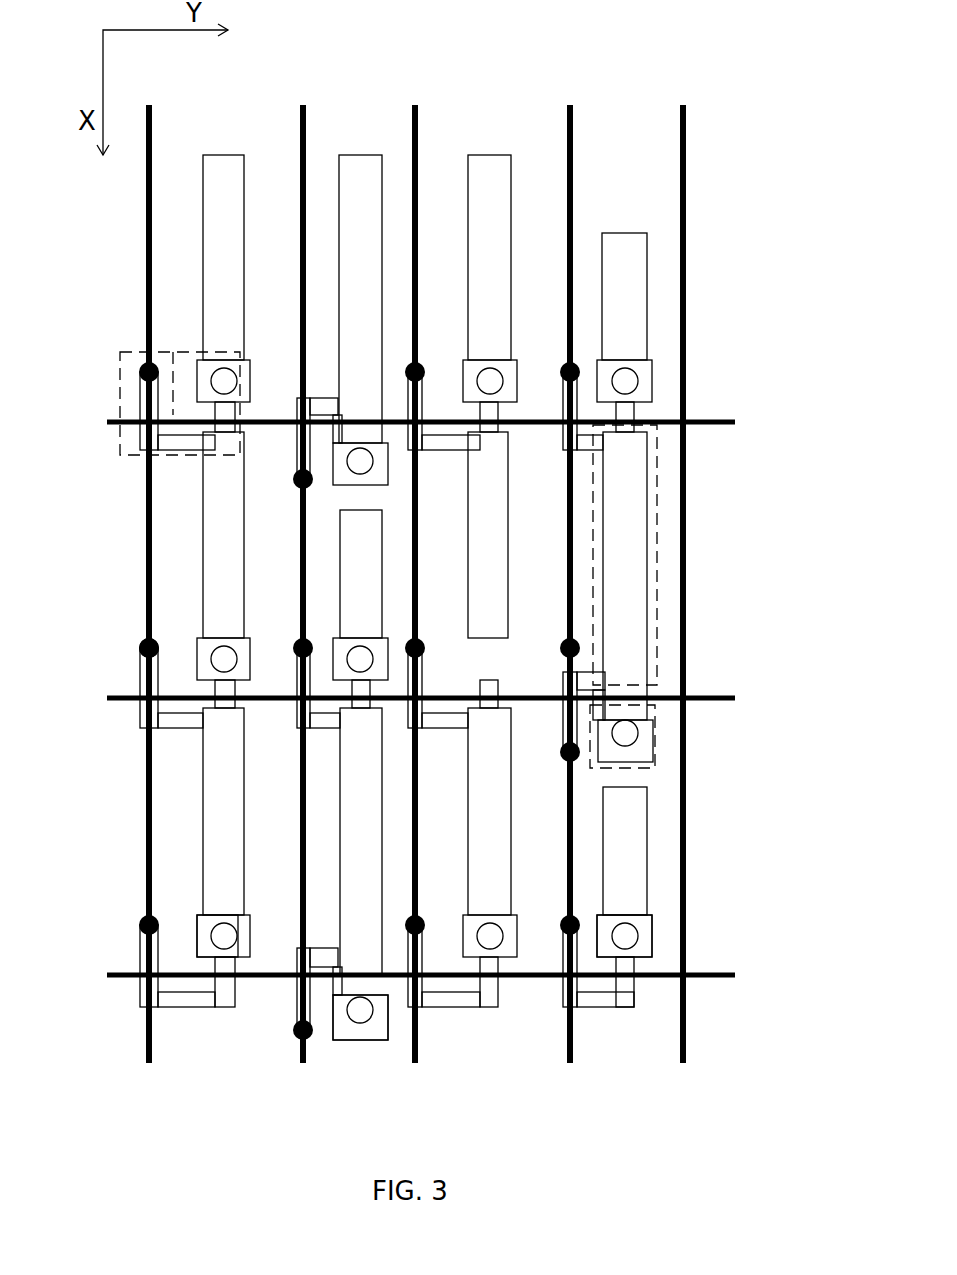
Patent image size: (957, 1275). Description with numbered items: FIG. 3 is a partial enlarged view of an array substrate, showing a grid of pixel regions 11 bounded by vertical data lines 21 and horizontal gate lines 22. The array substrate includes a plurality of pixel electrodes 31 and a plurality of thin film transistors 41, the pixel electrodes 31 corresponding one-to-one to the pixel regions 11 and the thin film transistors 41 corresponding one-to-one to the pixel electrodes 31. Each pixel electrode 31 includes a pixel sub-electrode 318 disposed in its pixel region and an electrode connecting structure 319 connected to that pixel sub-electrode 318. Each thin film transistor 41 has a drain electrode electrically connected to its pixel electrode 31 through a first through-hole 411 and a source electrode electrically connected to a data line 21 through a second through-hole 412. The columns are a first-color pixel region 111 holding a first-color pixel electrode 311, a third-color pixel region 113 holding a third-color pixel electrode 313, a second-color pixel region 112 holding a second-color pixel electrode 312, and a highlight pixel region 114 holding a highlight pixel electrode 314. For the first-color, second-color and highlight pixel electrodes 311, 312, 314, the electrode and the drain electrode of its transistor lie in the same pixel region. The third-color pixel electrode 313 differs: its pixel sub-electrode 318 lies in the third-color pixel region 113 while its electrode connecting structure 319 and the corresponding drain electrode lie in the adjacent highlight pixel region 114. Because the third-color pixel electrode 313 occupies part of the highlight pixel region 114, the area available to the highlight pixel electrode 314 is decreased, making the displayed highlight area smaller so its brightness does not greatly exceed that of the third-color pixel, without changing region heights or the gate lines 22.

The pixel region 11 is at (421, 543).
The first-color pixel region 111 is at (180, 160).
The second-color pixel region 112 is at (468, 160).
The third-color pixel region 113 is at (325, 160).
The highlight pixel region 114 is at (592, 170).
The data line 21 is at (573, 212).
The gate line 22 is at (663, 420).
The pixel electrode 31 is at (464, 996).
The first-color pixel electrode 311 is at (233, 873).
The second-color pixel electrode 312 is at (498, 873).
The third-color pixel electrode 313 is at (372, 873).
The highlight pixel electrode 314 is at (638, 873).
The thin film transistor 41 is at (125, 383).
The first through-hole 411 is at (224, 648).
The second through-hole 412 is at (149, 648).
The pixel sub-electrode 318 is at (657, 537).
The electrode connecting structure 319 is at (655, 737).